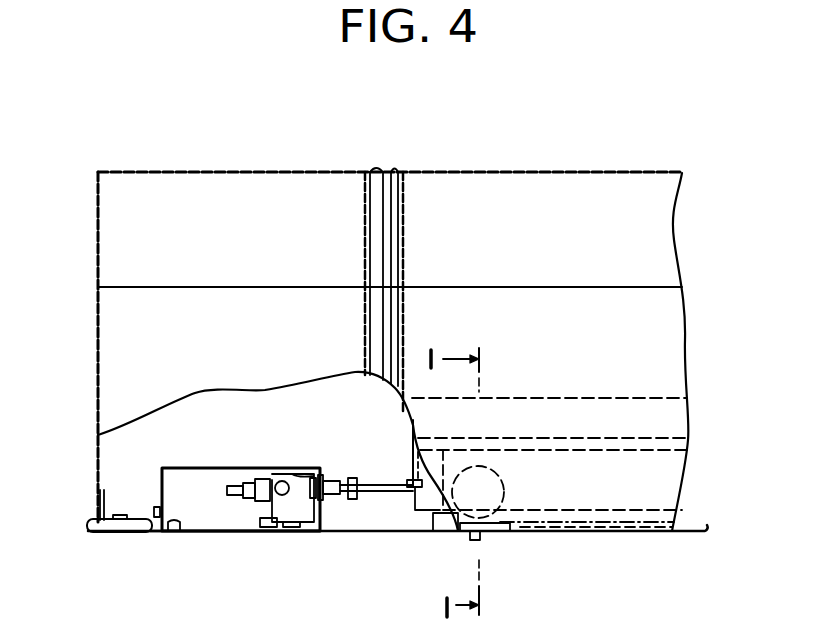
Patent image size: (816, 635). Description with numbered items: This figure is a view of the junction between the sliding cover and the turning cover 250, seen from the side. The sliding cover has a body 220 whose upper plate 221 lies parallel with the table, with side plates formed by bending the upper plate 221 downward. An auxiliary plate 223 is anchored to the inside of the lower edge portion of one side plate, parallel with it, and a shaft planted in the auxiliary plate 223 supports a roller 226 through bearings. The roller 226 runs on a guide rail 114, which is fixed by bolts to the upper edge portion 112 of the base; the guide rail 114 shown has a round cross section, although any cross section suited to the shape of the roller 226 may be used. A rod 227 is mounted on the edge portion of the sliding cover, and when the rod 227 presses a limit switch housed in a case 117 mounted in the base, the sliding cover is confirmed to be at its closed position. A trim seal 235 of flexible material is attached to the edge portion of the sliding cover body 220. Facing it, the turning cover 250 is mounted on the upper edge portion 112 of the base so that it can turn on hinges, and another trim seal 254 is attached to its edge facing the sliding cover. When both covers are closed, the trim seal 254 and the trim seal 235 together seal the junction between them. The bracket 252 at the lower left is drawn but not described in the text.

The turning cover 250 is at (205, 192).
The trim seal 254 is at (378, 175).
The trim seal 235 is at (400, 175).
The body 220 is at (568, 195).
The upper plate 221 is at (650, 172).
The auxiliary plate 223 is at (675, 472).
The roller 226 is at (503, 520).
The guide rail 114 is at (610, 513).
The bracket 252 is at (97, 510).
The case 117 is at (230, 467).
The rod 227 is at (390, 495).
The upper edge portion 112 is at (185, 535).